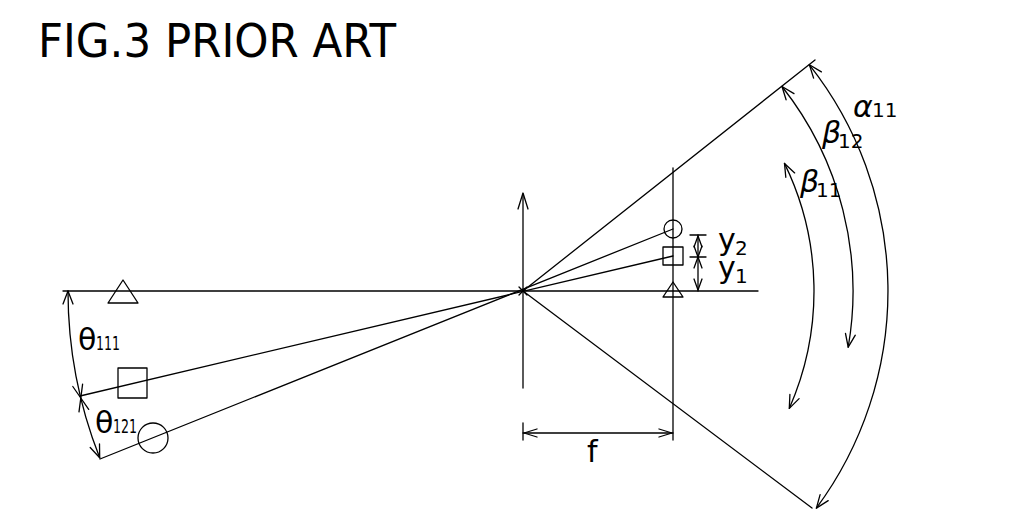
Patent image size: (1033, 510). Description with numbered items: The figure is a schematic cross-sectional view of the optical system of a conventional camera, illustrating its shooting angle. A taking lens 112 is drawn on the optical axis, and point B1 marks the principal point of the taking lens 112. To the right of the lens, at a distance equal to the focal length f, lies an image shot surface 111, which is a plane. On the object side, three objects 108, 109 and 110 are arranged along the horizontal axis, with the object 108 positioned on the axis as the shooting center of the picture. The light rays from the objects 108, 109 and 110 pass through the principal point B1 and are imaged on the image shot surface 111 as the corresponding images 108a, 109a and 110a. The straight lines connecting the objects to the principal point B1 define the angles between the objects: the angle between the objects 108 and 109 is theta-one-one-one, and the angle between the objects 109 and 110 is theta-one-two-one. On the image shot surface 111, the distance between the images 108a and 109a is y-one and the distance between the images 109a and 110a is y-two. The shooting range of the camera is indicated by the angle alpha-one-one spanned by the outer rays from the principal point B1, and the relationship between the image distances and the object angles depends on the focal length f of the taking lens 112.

The object 108 is at (130, 283).
The object 109 is at (138, 375).
The object 110 is at (158, 430).
The image shot surface 111 is at (675, 205).
The taking lens 112 is at (525, 243).
The object image 108a is at (680, 294).
The object image 109a is at (664, 262).
The object image 110a is at (678, 222).
The principal point B1 is at (521, 289).